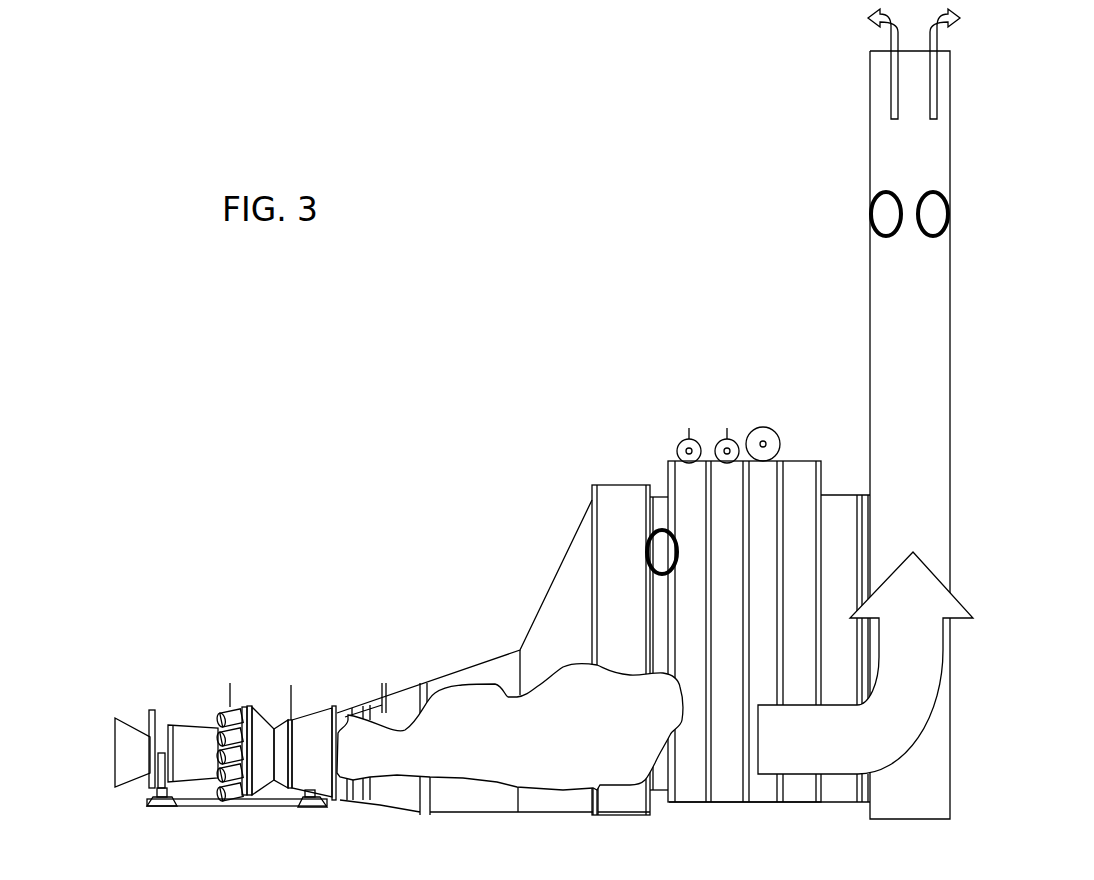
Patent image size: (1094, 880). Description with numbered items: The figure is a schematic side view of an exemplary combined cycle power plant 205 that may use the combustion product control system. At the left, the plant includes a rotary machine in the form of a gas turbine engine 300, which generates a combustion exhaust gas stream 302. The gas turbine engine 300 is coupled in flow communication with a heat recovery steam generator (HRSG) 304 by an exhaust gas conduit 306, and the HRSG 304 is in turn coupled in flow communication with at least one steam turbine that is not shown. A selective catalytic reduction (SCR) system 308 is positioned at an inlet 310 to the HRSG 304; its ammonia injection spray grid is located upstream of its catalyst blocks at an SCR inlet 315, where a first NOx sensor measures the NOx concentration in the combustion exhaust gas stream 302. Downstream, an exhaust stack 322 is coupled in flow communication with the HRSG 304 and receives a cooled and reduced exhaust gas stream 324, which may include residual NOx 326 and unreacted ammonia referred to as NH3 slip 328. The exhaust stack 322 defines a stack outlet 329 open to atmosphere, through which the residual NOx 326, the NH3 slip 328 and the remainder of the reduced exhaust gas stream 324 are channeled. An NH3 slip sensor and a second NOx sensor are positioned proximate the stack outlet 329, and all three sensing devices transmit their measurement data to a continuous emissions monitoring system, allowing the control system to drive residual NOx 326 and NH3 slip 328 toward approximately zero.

The combined cycle power plant 205 is at (447, 393).
The gas turbine engine 300 is at (195, 748).
The combustion exhaust gas stream 302 is at (468, 703).
The heat recovery steam generator 304 is at (745, 420).
The exhaust gas conduit 306 is at (547, 625).
The selective catalytic reduction system 308 is at (685, 480).
The inlet 310 is at (698, 802).
The SCR inlet 315 is at (660, 613).
The exhaust stack 322 is at (940, 322).
The reduced exhaust gas stream 324 is at (935, 600).
The residual NOx 326 is at (898, 50).
The NH3 slip 328 is at (928, 50).
The stack outlet 329 is at (880, 143).